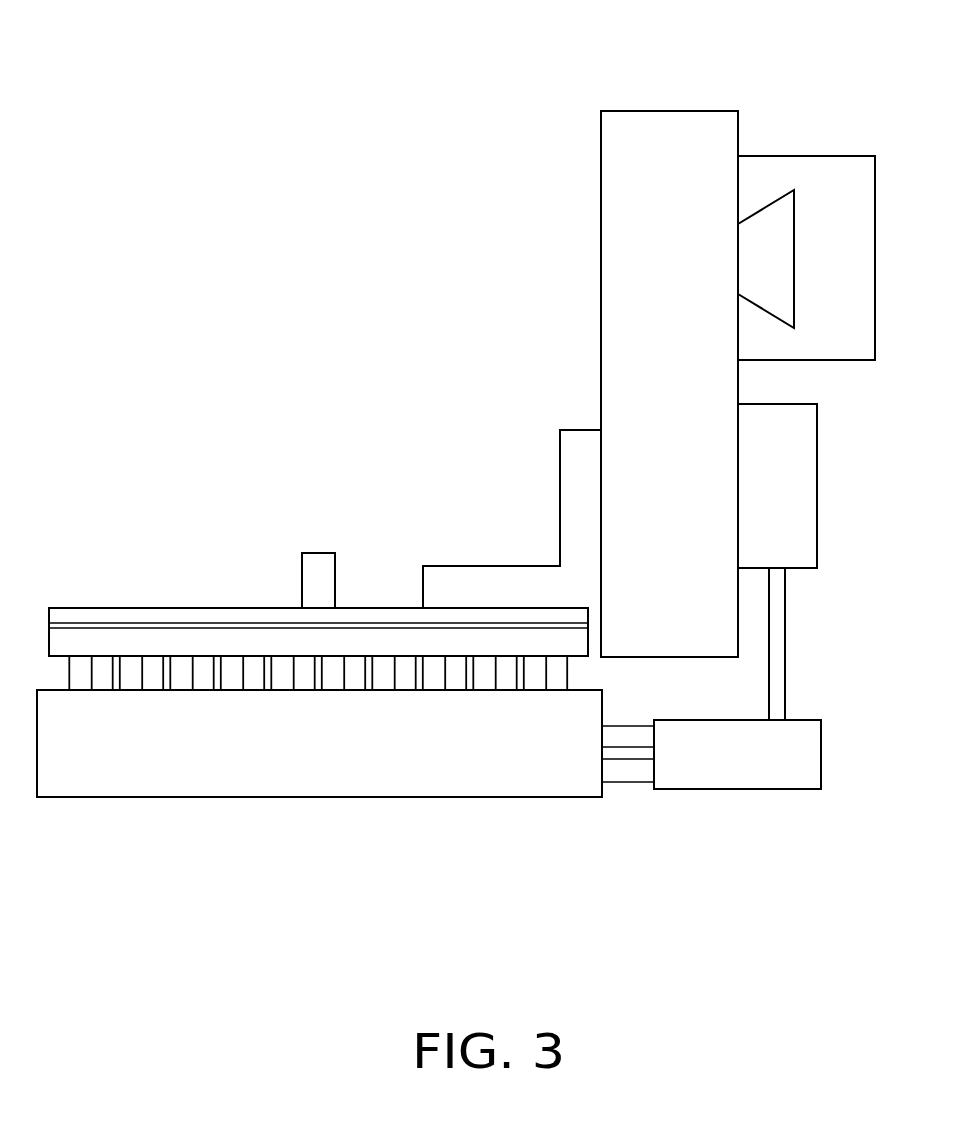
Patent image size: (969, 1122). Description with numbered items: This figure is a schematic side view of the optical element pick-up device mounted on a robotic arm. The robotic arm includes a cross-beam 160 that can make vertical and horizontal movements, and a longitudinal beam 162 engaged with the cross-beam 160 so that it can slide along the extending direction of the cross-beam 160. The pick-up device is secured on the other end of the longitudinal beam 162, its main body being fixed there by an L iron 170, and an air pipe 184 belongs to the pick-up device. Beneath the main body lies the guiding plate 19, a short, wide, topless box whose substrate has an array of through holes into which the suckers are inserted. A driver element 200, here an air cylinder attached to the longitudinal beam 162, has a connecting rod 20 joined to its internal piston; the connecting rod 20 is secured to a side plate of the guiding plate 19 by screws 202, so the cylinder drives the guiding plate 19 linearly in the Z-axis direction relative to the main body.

The cross-beam 160 is at (839, 190).
The longitudinal beam 162 is at (653, 182).
The L iron 170 is at (485, 577).
The air pipe 184 is at (317, 577).
The guiding plate 19 is at (157, 752).
The connecting rod 20 is at (775, 667).
The driver element 200 is at (790, 515).
The screws 202 is at (640, 768).